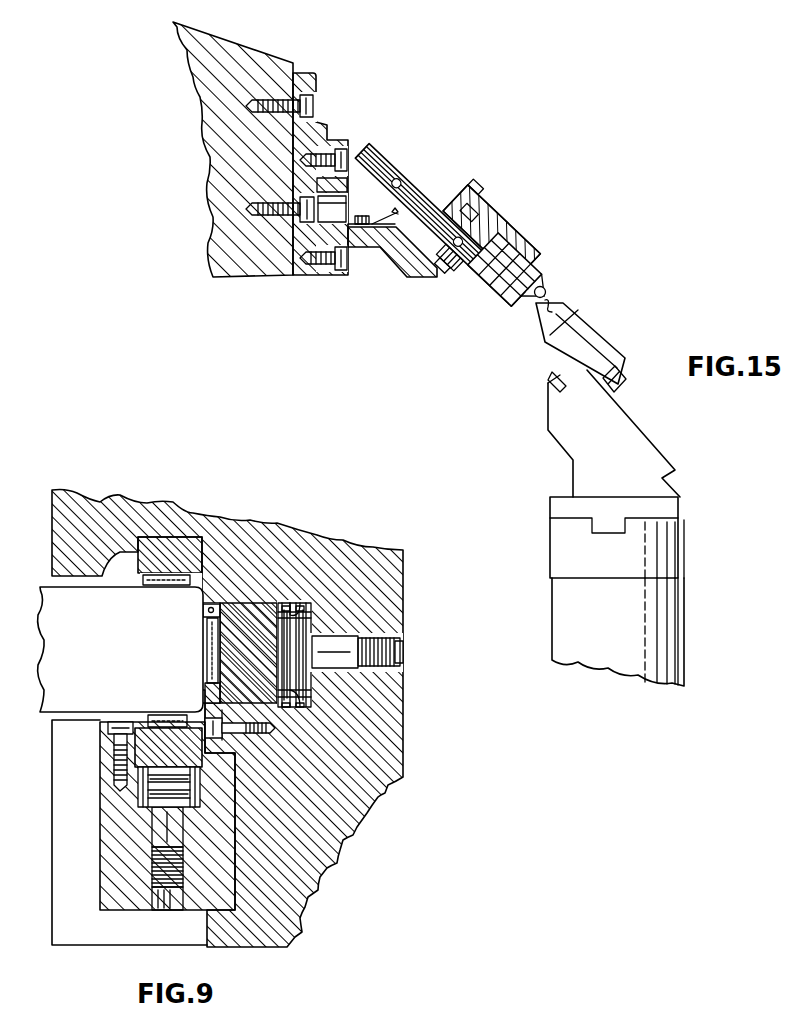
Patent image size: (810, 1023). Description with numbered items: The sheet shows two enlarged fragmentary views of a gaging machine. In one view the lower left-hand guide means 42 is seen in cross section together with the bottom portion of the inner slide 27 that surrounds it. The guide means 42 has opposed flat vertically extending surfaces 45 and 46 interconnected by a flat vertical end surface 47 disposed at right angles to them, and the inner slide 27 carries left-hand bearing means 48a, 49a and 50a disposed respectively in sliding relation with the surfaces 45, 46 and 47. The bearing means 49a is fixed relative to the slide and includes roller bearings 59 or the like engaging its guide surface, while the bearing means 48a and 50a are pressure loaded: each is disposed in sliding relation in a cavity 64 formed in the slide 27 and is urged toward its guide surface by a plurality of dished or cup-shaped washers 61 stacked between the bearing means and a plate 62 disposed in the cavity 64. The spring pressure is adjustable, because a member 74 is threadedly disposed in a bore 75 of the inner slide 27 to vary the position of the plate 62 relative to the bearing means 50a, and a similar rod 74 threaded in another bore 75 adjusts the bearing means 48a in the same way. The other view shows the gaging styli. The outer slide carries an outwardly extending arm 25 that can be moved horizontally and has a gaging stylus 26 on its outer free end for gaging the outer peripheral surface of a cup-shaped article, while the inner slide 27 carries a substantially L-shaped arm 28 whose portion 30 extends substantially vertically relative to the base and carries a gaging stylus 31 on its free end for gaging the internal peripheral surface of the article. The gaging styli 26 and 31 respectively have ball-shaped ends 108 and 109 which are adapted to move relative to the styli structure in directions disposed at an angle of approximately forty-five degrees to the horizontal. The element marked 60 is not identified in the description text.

In FIG. 15, the outwardly extending arm 25 is at (255, 52).
In FIG. 15, the gaging stylus 26 is at (508, 232).
In FIG. 15, the ball-shaped end 108 is at (547, 290).
In FIG. 15, the ball-shaped end 109 is at (536, 305).
In FIG. 15, the gaging stylus 31 is at (597, 335).
In FIG. 15, the vertically extending portion 30 is at (665, 598).
In FIG. 15, the L-shaped arm 28 is at (665, 654).
In FIG. 9, the inner slide 27 is at (395, 771).
In FIG. 9, the bearing means 49a is at (178, 532).
In FIG. 9, the roller bearings 59 is at (163, 587).
In FIG. 9, the flat vertical end surface 47 is at (204, 611).
In FIG. 9, the flat vertically extending surface 46 is at (135, 588).
In FIG. 9, the guide means 42 is at (62, 600).
In FIG. 9, the flat vertically extending surface 45 is at (68, 720).
In FIG. 9, the bearing means 50a is at (250, 610).
In FIG. 9, the cavity 64 is at (300, 614).
In FIG. 9, the plate 62 is at (314, 690).
In FIG. 9, the dished washers 61 is at (295, 707).
In FIG. 9, the adjusting member 74 is at (338, 645).
In FIG. 9, the bore 75 is at (366, 640).
In FIG. 9, the bearing means 48a is at (182, 753).
In FIG. 9, the roller bearing 60 is at (192, 790).